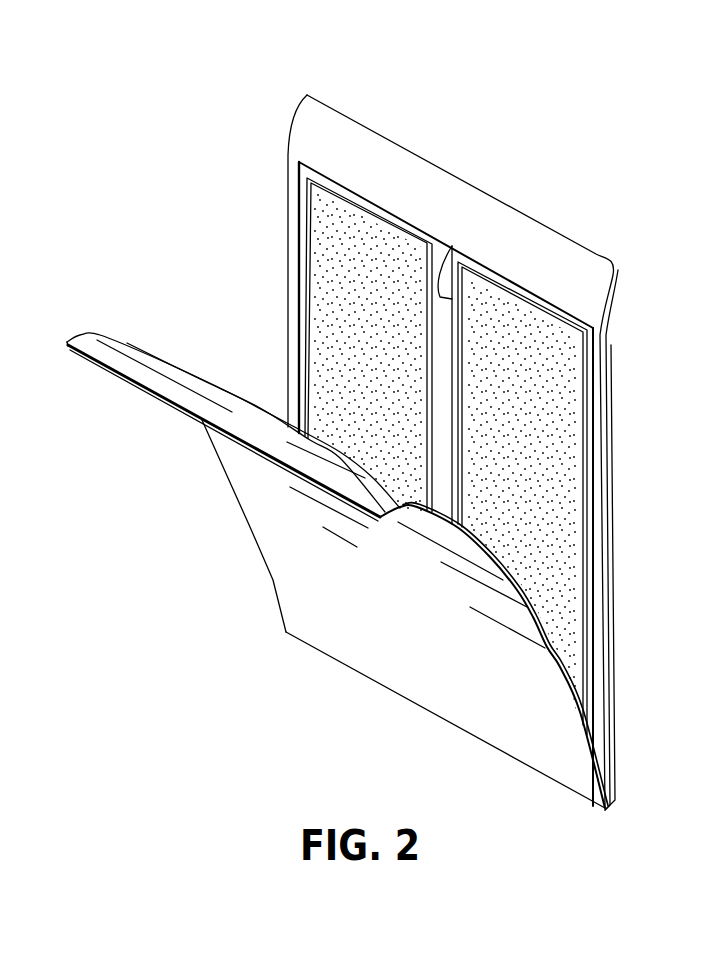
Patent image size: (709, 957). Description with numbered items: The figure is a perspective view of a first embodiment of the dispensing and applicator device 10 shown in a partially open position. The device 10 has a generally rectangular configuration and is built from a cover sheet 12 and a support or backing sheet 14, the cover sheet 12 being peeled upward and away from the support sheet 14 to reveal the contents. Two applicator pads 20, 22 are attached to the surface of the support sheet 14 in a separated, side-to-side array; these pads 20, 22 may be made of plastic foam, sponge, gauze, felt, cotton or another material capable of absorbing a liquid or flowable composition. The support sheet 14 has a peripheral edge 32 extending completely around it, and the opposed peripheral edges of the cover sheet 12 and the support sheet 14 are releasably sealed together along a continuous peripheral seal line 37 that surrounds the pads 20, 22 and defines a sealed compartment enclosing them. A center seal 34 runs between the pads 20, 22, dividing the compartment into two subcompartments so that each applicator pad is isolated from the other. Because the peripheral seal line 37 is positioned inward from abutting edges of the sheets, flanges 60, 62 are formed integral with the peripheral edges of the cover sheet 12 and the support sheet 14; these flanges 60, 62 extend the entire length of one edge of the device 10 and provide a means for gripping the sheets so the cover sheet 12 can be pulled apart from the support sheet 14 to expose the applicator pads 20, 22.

The dispensing and applicator device 10 is at (498, 122).
The cover sheet 12 is at (108, 331).
The support sheet 14 is at (613, 260).
The applicator pad 20 is at (358, 210).
The applicator pad 22 is at (528, 290).
The peripheral edge 32 is at (296, 163).
The center seal 34 is at (500, 257).
The peripheral seal line 37 is at (298, 257).
The flange 60 is at (153, 378).
The flange 62 is at (457, 207).